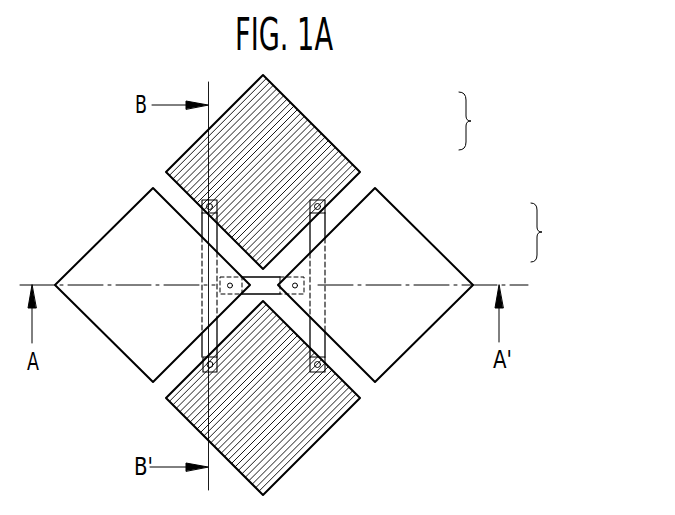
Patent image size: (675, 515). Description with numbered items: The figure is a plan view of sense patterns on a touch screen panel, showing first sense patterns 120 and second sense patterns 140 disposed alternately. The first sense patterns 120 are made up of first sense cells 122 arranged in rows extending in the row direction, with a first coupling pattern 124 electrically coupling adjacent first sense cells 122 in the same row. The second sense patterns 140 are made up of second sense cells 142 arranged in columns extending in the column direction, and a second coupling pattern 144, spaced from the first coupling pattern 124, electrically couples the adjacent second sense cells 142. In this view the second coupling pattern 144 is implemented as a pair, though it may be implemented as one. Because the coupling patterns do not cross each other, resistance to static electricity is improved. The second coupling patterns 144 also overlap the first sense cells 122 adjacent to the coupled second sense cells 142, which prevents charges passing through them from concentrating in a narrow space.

The first sense pattern 120 is at (551, 232).
The first sense cell 122 is at (112, 252).
The first coupling pattern 124 is at (280, 268).
The second sense pattern 140 is at (478, 121).
The second sense cell 142 is at (305, 137).
The second coupling pattern 144 is at (273, 277).